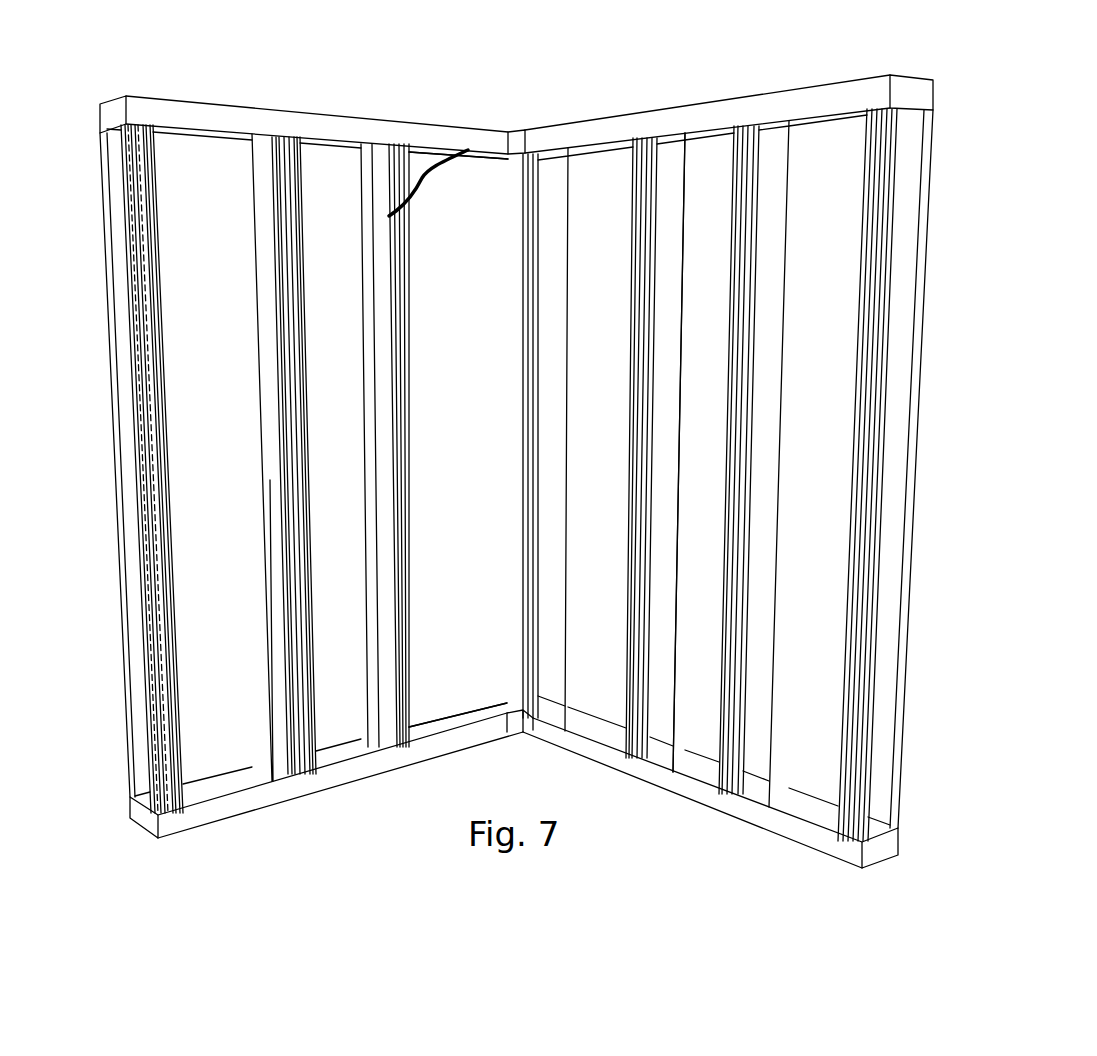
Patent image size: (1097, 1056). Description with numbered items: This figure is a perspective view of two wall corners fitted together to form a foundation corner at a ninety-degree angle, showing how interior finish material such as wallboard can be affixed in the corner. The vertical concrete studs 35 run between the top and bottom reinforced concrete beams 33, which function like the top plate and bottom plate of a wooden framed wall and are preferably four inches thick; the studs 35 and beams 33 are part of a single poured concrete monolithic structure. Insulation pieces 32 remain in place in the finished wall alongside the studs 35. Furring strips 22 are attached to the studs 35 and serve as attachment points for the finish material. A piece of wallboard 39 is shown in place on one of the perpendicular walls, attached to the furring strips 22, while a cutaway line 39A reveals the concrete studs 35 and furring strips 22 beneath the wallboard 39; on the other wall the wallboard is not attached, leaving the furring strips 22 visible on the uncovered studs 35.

The furring strip 22 is at (133, 183).
The insulation piece 32 is at (194, 481).
The top and bottom beams 33 is at (440, 122).
The concrete stud 35 is at (267, 263).
The wallboard 39 is at (431, 369).
The cutaway line 39A is at (437, 166).